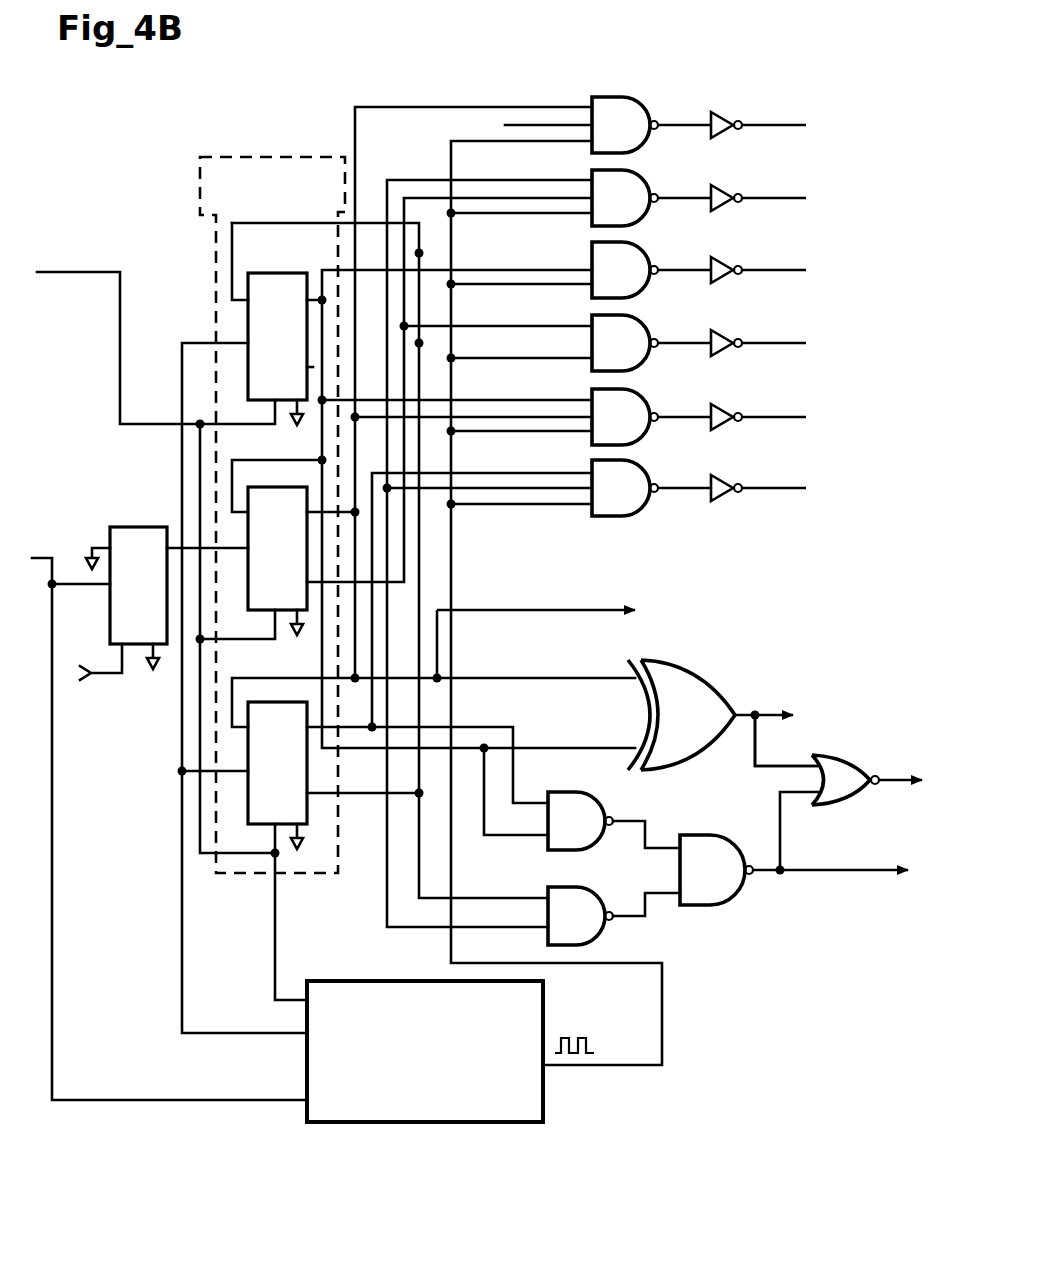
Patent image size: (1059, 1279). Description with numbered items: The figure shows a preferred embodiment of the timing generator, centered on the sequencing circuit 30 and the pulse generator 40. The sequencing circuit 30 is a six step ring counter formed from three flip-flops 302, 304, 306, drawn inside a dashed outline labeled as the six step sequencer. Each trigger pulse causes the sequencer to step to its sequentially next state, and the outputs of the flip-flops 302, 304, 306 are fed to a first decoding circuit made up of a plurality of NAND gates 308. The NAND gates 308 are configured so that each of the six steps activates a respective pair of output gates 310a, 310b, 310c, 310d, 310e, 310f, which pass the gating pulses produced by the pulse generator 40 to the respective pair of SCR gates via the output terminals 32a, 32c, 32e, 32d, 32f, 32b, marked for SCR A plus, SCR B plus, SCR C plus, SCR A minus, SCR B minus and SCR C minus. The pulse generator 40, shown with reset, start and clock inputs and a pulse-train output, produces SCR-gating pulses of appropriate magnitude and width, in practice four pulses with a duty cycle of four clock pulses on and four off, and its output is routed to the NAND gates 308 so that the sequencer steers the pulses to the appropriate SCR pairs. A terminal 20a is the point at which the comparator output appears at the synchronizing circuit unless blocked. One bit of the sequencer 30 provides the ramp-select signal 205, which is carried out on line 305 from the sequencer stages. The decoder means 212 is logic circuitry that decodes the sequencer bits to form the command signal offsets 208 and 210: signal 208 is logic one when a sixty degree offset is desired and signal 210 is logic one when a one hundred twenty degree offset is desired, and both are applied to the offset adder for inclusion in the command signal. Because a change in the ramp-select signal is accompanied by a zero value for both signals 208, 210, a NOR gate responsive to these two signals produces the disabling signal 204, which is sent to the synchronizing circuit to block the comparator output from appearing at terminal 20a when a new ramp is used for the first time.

The sequencing circuit 30 is at (265, 152).
The flip-flop 302 is at (285, 290).
The flip-flop 304 is at (288, 495).
The flip-flop 306 is at (282, 718).
The NAND gates 308 is at (610, 92).
The output gate 310a is at (745, 84).
The output gate 310b is at (722, 192).
The output gate 310c is at (722, 265).
The output gate 310d is at (722, 337).
The output gate 310e is at (722, 410).
The output gate 310f is at (720, 484).
The output terminal 32a is at (828, 85).
The output terminal 32c is at (795, 198).
The output terminal 32e is at (794, 270).
The output terminal 32d is at (795, 342).
The output terminal 32f is at (797, 416).
The output terminal 32b is at (797, 487).
The sequencer output line 305 is at (453, 578).
The ramp-select signal 205 is at (572, 610).
The command signal offset 210 is at (770, 710).
The decoder means 212 is at (812, 730).
The disabling signal 204 is at (893, 777).
The command signal offset 208 is at (858, 870).
The terminal 20a is at (112, 677).
The pulse generator 40 is at (458, 1022).